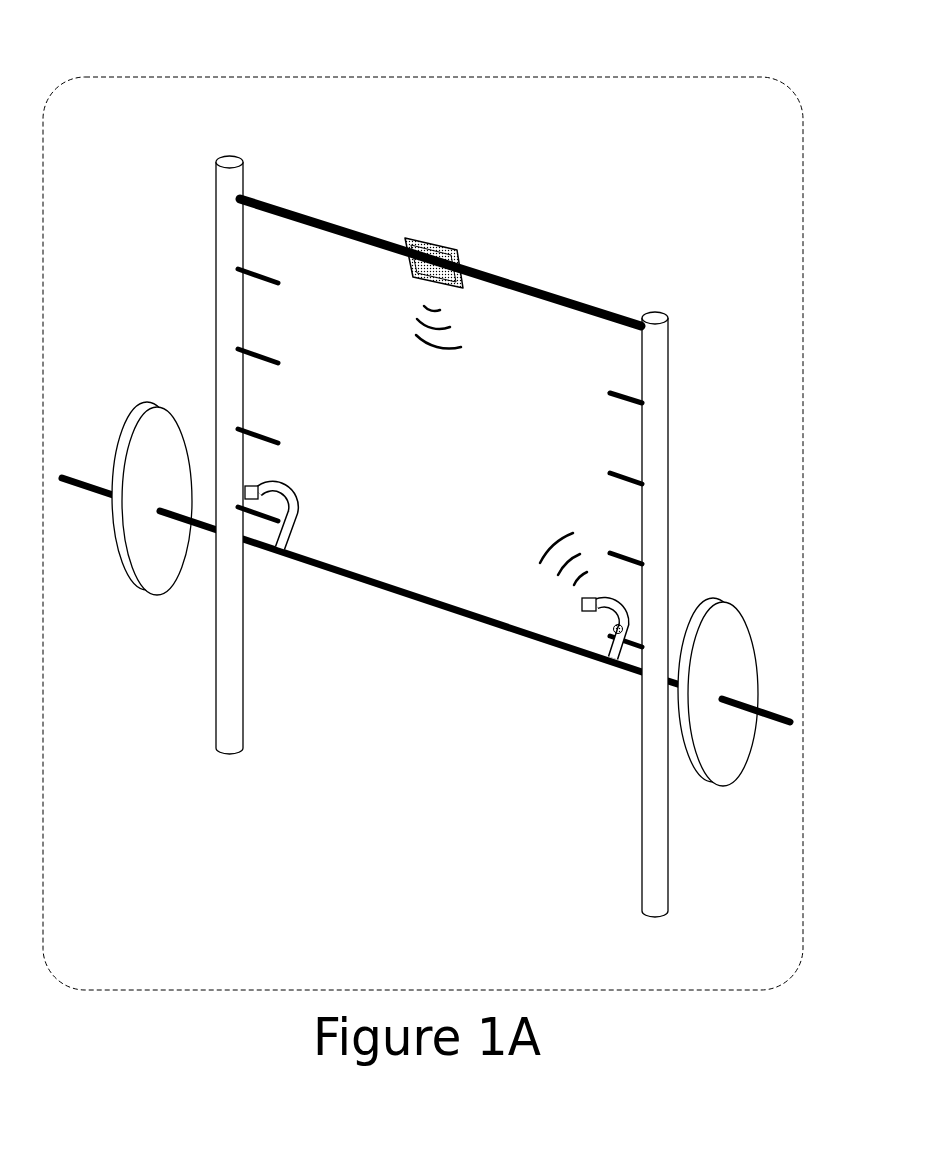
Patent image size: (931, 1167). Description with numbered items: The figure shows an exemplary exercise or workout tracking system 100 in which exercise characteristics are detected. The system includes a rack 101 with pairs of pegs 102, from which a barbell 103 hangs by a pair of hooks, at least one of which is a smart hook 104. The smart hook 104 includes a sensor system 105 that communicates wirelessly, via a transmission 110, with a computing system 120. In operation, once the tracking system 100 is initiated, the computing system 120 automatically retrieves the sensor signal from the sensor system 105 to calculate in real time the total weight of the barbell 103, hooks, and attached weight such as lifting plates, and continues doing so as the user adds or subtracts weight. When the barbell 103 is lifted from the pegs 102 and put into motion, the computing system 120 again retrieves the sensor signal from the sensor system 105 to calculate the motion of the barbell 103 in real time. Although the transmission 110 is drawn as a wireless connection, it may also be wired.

The exercise tracking system 100 is at (95, 78).
The rack 101 is at (198, 212).
The pegs 102 is at (608, 458).
The barbell 103 is at (360, 602).
The smart hook 104 is at (577, 667).
The sensor system 105 is at (621, 626).
The transmission 110 is at (410, 359).
The computing system 120 is at (443, 242).